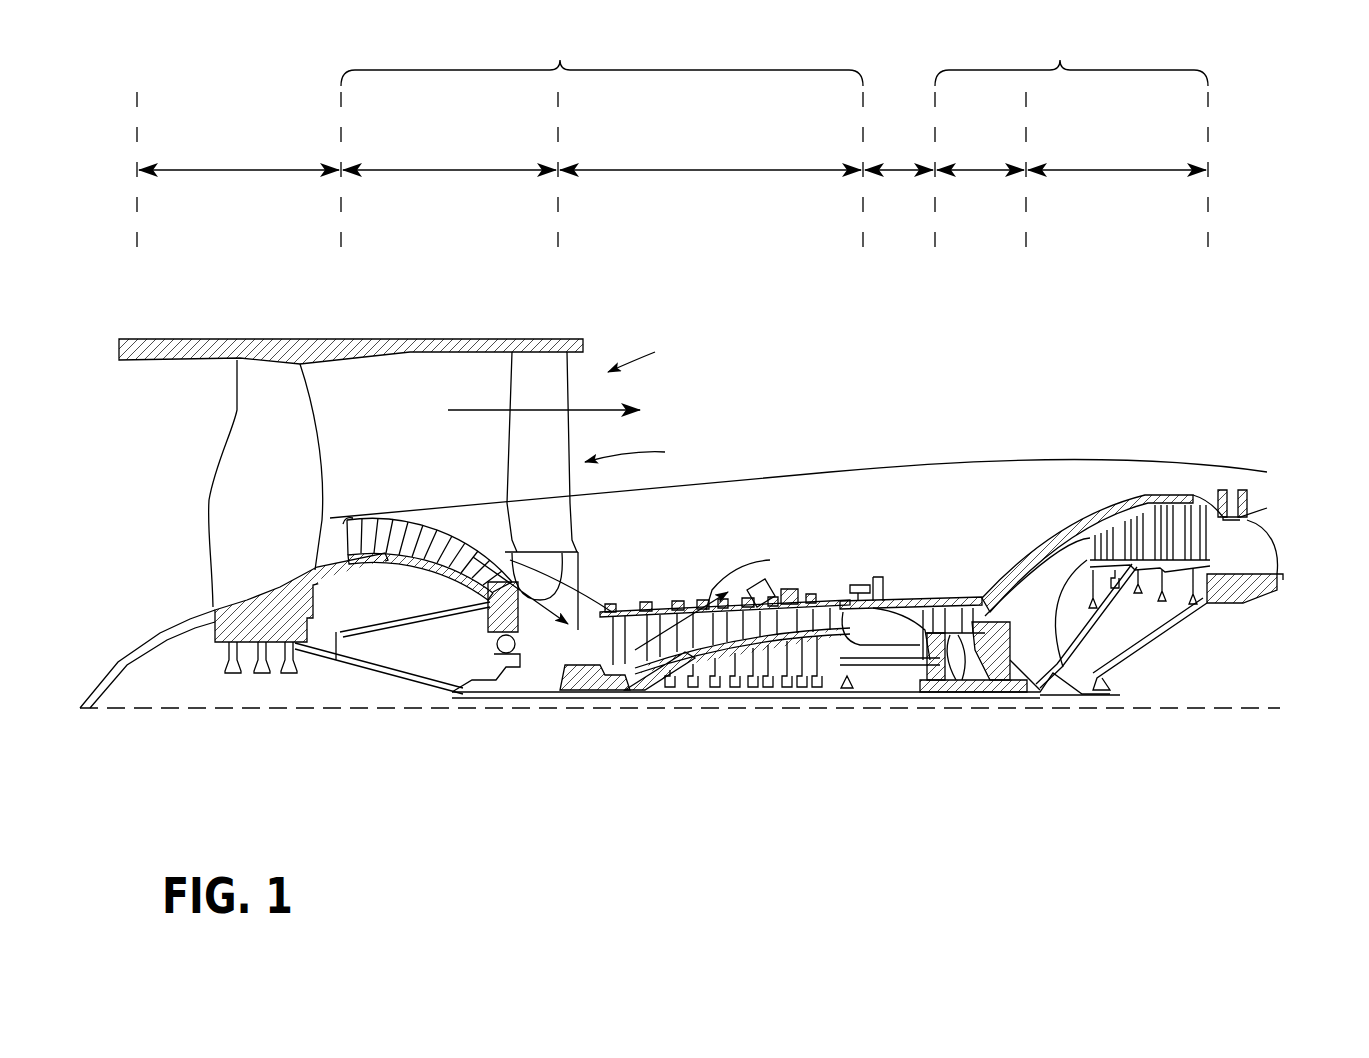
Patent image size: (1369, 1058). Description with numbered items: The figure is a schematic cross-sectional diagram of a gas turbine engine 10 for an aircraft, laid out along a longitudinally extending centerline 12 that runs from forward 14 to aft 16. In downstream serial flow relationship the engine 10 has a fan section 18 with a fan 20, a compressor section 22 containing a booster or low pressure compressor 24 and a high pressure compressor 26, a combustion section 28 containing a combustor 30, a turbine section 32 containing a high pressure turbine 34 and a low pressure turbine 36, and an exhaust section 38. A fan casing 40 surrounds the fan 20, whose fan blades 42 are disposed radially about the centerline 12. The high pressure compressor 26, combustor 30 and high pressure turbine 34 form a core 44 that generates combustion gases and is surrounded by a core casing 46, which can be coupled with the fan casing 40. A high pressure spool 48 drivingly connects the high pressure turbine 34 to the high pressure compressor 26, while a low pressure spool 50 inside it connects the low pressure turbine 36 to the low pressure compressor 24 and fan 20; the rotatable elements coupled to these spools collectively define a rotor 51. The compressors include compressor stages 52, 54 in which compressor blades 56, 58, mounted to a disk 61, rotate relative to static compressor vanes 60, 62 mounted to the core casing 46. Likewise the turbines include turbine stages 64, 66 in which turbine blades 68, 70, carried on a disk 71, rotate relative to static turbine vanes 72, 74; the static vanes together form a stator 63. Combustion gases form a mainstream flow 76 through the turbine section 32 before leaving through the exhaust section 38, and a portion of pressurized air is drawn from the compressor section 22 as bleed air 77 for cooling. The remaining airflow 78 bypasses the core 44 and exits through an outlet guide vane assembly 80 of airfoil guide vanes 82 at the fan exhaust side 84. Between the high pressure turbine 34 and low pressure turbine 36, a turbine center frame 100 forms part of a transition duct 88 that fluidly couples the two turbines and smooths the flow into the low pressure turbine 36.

The gas turbine engine 10 is at (892, 328).
The centerline 12 is at (235, 713).
The forward 14 is at (112, 474).
The aft 16 is at (1326, 559).
The fan section 18 is at (239, 158).
The fan 20 is at (172, 550).
The compressor section 22 is at (602, 60).
The low pressure compressor 24 is at (449, 158).
The high pressure compressor 26 is at (710, 158).
The combustion section 28 is at (899, 152).
The combustor 30 is at (896, 605).
The turbine section 32 is at (1071, 60).
The high pressure turbine 34 is at (980, 158).
The low pressure turbine 36 is at (1117, 158).
The exhaust section 38 is at (1290, 518).
The fan casing 40 is at (257, 350).
The fan blades 42 is at (297, 417).
The core 44 is at (840, 505).
The core casing 46 is at (1073, 537).
The HP shaft or spool 48 is at (862, 692).
The LP shaft or spool 50 is at (492, 702).
The rotor 51 is at (770, 712).
The compressor stages of the LP compressor 52 is at (422, 512).
The compressor stages of the HP compressor 54 is at (706, 638).
The compressor blades of the LP compressor 56 is at (388, 545).
The compressor blades of the HP compressor 58 is at (618, 655).
The static compressor vanes of the LP compressor 60 is at (352, 518).
The disk 61 is at (634, 672).
The static compressor vanes of the HP compressor 62 is at (602, 645).
The stator 63 is at (610, 668).
The turbine stages of the HP turbine 64 is at (973, 589).
The turbine stages of the LP turbine 66 is at (1149, 500).
The turbine blades of the HP turbine 68 is at (930, 510).
The turbine blades of the LP turbine 70 is at (1180, 496).
The disk 71 is at (940, 692).
The static turbine vanes of the HP turbine 72 is at (937, 595).
The static turbine vanes of the LP turbine 74 is at (1147, 503).
The mainstream flow 76 is at (560, 610).
The bleed air 77 is at (712, 594).
The airflow 78 is at (470, 408).
The outlet guide vane assembly 80 is at (641, 451).
The airfoil guide vanes 82 is at (520, 447).
The fan exhaust side 84 is at (647, 355).
The transition duct 88 is at (1123, 580).
The turbine center frame 100 is at (1084, 696).